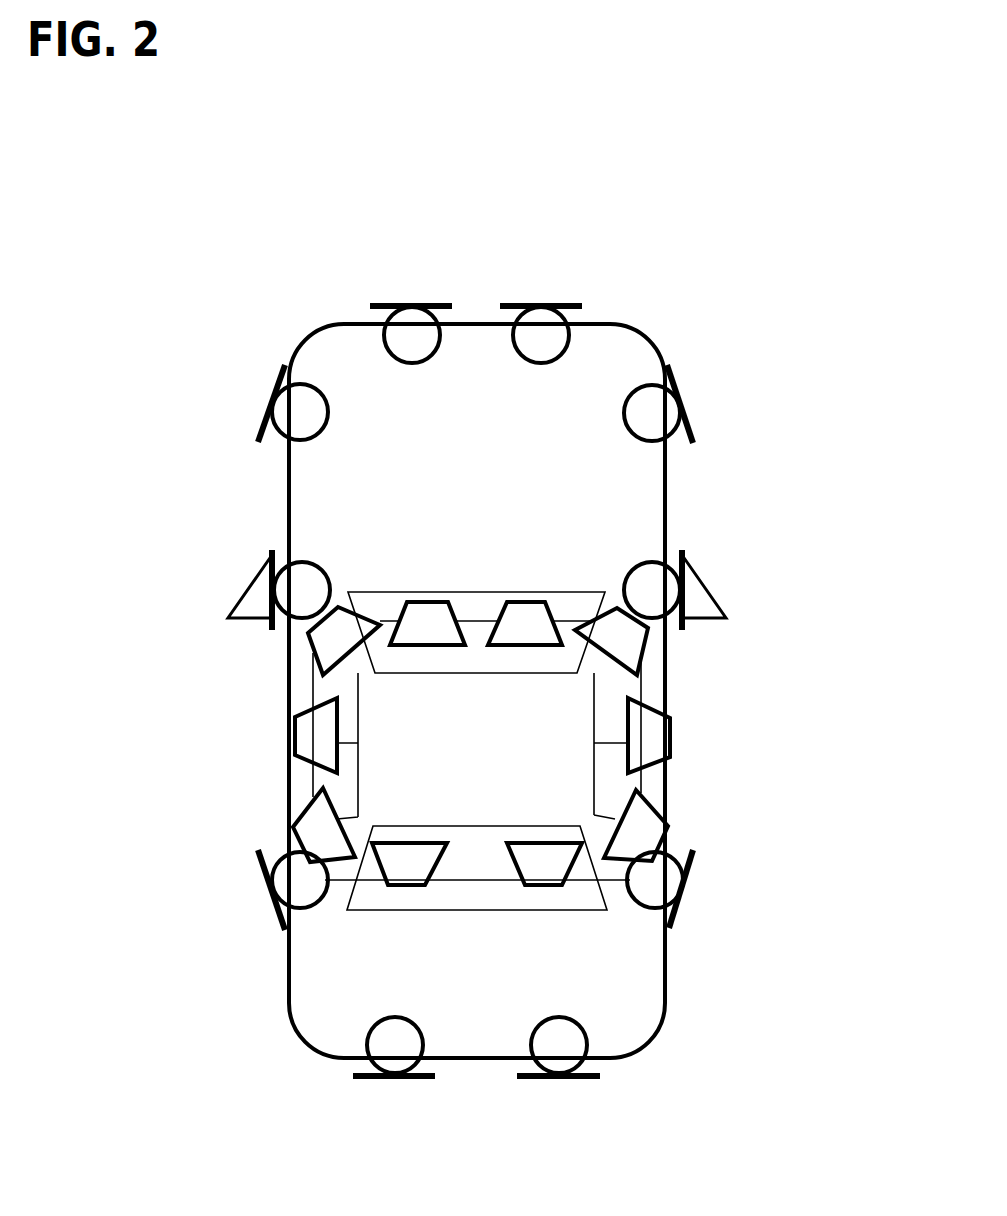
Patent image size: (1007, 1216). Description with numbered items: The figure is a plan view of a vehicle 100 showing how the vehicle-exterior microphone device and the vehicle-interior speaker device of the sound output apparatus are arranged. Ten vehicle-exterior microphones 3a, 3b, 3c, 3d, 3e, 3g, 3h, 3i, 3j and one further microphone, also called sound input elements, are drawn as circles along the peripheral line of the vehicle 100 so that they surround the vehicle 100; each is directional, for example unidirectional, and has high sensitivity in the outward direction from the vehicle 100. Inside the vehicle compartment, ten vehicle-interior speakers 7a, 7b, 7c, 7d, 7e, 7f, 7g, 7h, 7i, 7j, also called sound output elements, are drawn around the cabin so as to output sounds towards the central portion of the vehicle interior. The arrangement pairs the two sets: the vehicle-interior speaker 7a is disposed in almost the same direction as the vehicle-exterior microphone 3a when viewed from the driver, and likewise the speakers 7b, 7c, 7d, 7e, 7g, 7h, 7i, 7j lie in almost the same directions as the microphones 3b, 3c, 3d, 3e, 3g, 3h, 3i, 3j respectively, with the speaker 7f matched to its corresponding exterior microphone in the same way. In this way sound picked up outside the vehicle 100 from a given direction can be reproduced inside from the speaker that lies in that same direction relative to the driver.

The vehicle 100 is at (319, 330).
The vehicle-exterior microphone 3a is at (533, 328).
The vehicle-exterior microphone 3b is at (662, 408).
The vehicle-exterior microphone 3c is at (667, 588).
The vehicle-exterior microphone 3d is at (667, 883).
The vehicle-exterior microphone 3e is at (555, 1053).
The vehicle-exterior microphone 3g is at (287, 877).
The vehicle-exterior microphone 3h is at (288, 588).
The vehicle-exterior microphone 3i is at (295, 413).
The vehicle-exterior microphone 3j is at (412, 325).
The vehicle-interior speaker 7a is at (524, 608).
The vehicle-interior speaker 7b is at (629, 640).
The vehicle-interior speaker 7c is at (653, 735).
The vehicle-interior speaker 7d is at (640, 820).
The vehicle-interior speaker 7e is at (542, 873).
The vehicle-interior speaker 7f is at (407, 883).
The vehicle-interior speaker 7g is at (318, 826).
The vehicle-interior speaker 7h is at (316, 745).
The vehicle-interior speaker 7i is at (325, 640).
The vehicle-interior speaker 7j is at (430, 608).